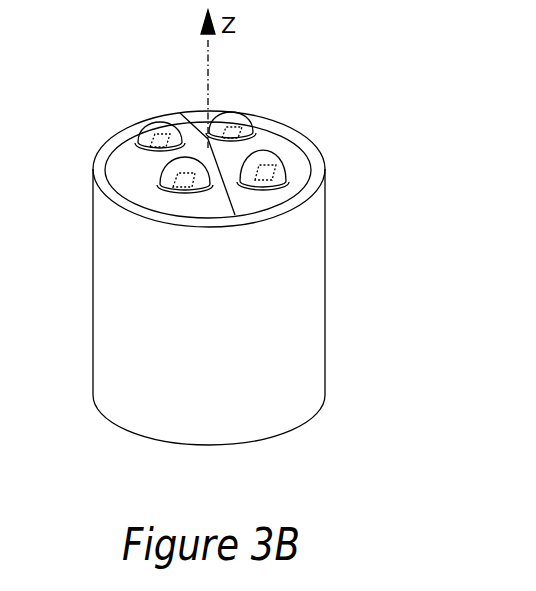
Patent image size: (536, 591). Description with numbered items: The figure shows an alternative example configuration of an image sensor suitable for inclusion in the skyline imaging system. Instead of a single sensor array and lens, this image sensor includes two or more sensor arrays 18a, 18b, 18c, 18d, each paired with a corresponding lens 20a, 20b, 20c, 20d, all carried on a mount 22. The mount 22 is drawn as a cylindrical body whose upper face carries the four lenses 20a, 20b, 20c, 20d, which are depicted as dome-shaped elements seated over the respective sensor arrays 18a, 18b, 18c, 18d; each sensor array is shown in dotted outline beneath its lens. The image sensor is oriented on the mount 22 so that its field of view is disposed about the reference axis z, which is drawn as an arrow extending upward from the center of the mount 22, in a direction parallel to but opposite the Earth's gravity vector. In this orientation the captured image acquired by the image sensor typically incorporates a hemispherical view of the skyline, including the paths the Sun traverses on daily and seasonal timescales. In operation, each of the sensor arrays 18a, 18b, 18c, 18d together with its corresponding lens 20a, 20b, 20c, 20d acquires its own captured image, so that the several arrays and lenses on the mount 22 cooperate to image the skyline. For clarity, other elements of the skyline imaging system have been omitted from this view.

The mount 22 is at (92, 262).
The lens 20a is at (158, 123).
The lens 20b is at (160, 175).
The lens 20c is at (283, 165).
The lens 20d is at (208, 139).
The sensor array 18a is at (160, 147).
The sensor array 18b is at (208, 139).
The sensor array 18c is at (270, 184).
The sensor array 18d is at (252, 137).